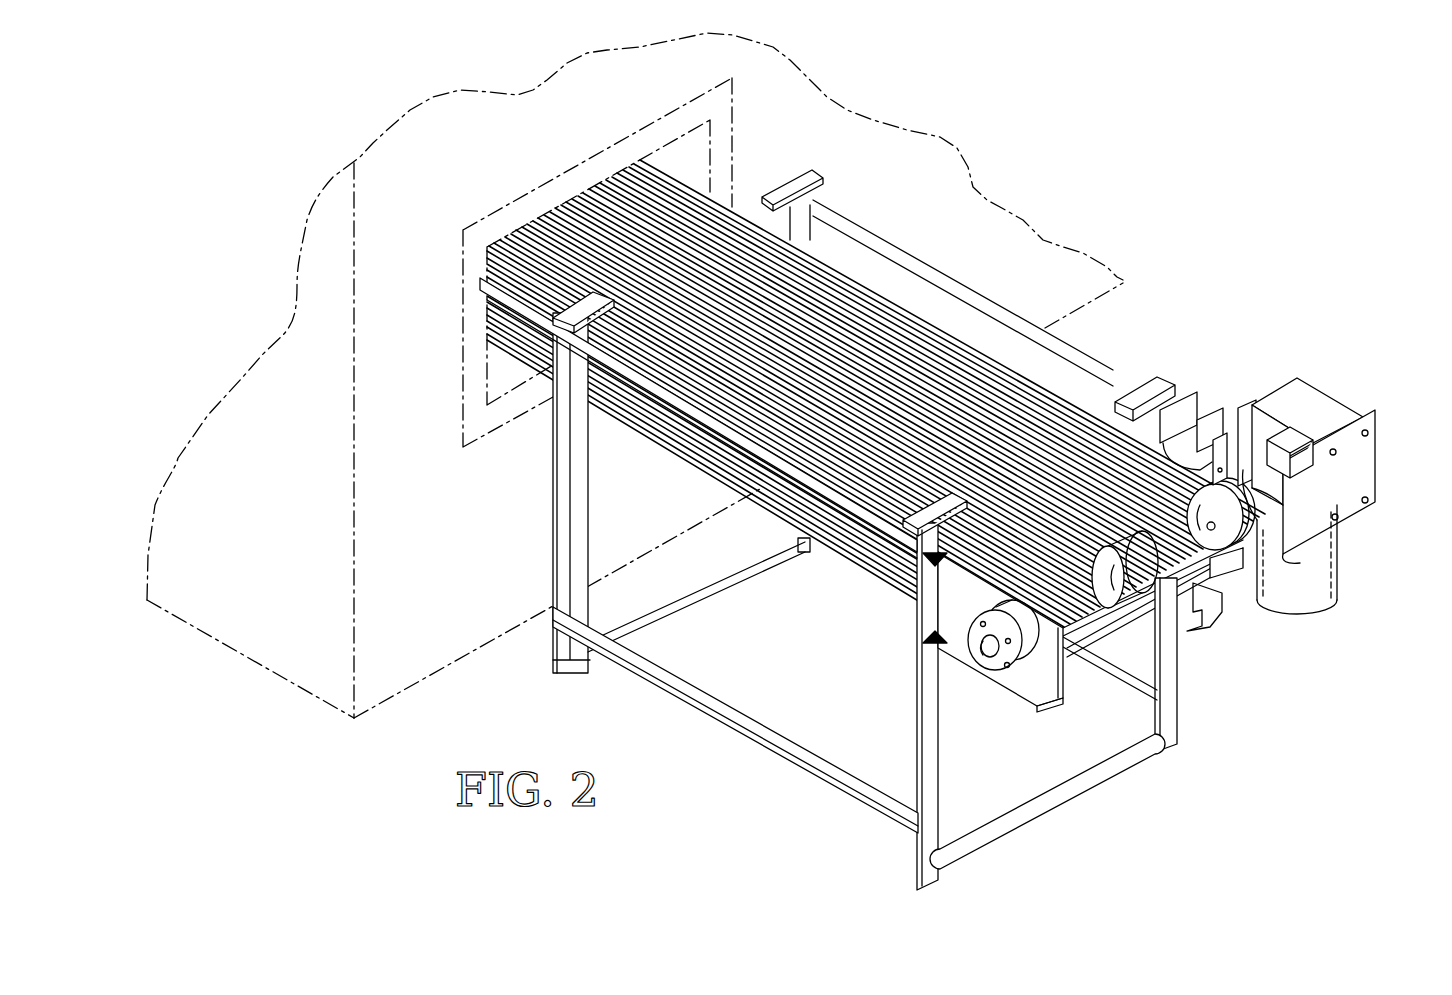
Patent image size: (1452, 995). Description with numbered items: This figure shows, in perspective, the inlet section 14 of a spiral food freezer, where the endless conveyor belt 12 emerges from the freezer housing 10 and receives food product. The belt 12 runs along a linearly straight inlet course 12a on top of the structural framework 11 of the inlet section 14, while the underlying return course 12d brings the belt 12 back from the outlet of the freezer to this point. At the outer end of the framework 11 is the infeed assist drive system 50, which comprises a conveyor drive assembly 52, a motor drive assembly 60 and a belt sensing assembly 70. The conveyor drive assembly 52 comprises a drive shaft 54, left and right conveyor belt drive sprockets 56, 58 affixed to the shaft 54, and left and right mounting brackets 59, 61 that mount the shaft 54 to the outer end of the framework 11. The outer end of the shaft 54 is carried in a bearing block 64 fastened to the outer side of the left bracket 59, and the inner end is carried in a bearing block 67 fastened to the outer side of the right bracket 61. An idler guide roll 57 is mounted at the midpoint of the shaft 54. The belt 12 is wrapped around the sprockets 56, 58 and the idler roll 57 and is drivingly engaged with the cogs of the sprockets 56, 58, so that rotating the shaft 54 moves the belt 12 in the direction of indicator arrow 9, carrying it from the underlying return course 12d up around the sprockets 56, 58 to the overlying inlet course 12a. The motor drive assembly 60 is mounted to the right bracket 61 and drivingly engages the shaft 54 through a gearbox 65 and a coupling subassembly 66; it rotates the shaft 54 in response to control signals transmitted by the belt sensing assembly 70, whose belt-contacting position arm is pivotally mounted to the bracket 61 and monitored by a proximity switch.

The freezer housing 10 is at (995, 200).
The product inlet section 14 is at (510, 533).
The conveyor belt 12 is at (1062, 392).
The inlet course 12a is at (890, 316).
The return course 12d is at (705, 468).
The structural framework 11 is at (833, 783).
The infeed assist drive system 50 is at (1370, 524).
The conveyor drive assembly 52 is at (1035, 697).
The drive shaft 54 is at (985, 655).
The left conveyor belt drive sprocket 56 is at (1037, 605).
The idler guide roll 57 is at (1123, 610).
The right conveyor belt drive sprocket 58 is at (1280, 512).
The left mounting bracket 59 is at (1050, 696).
The motor drive assembly 60 is at (1359, 404).
The right mounting bracket 61 is at (1298, 578).
The bearing block 64 is at (985, 615).
The gearbox 65 is at (1362, 415).
The coupling subassembly 66 is at (1282, 452).
The bearing block 67 is at (1239, 462).
The belt sensing assembly 70 is at (1189, 413).
The indicator arrow 9 is at (1224, 612).